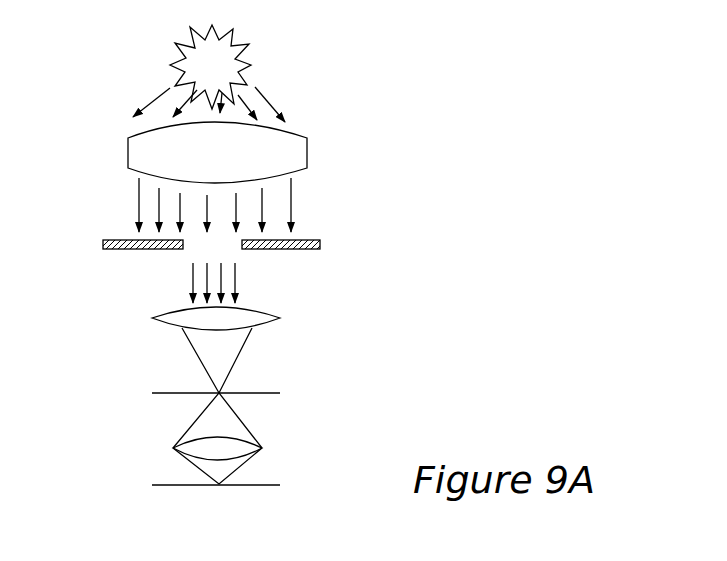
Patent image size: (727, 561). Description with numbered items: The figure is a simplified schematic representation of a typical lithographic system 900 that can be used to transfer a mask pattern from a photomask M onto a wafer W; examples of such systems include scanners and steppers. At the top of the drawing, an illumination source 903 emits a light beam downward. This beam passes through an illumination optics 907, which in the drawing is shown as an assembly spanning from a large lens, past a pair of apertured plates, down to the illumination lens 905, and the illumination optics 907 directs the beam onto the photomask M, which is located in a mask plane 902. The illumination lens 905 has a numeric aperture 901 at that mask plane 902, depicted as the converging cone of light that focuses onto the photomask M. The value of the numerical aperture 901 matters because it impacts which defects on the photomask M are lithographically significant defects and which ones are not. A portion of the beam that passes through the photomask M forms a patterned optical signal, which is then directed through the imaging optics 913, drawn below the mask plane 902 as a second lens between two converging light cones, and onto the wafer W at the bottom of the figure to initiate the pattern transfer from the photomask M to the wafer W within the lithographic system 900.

The lithographic system 900 is at (330, 60).
The illumination source 903 is at (178, 64).
The illumination optics 907 is at (80, 132).
The illumination lens 905 is at (278, 318).
The numeric aperture 901 is at (243, 350).
The mask plane 902 is at (140, 393).
The photomask M is at (263, 393).
The imaging optics 913 is at (117, 393).
The wafer W is at (173, 485).